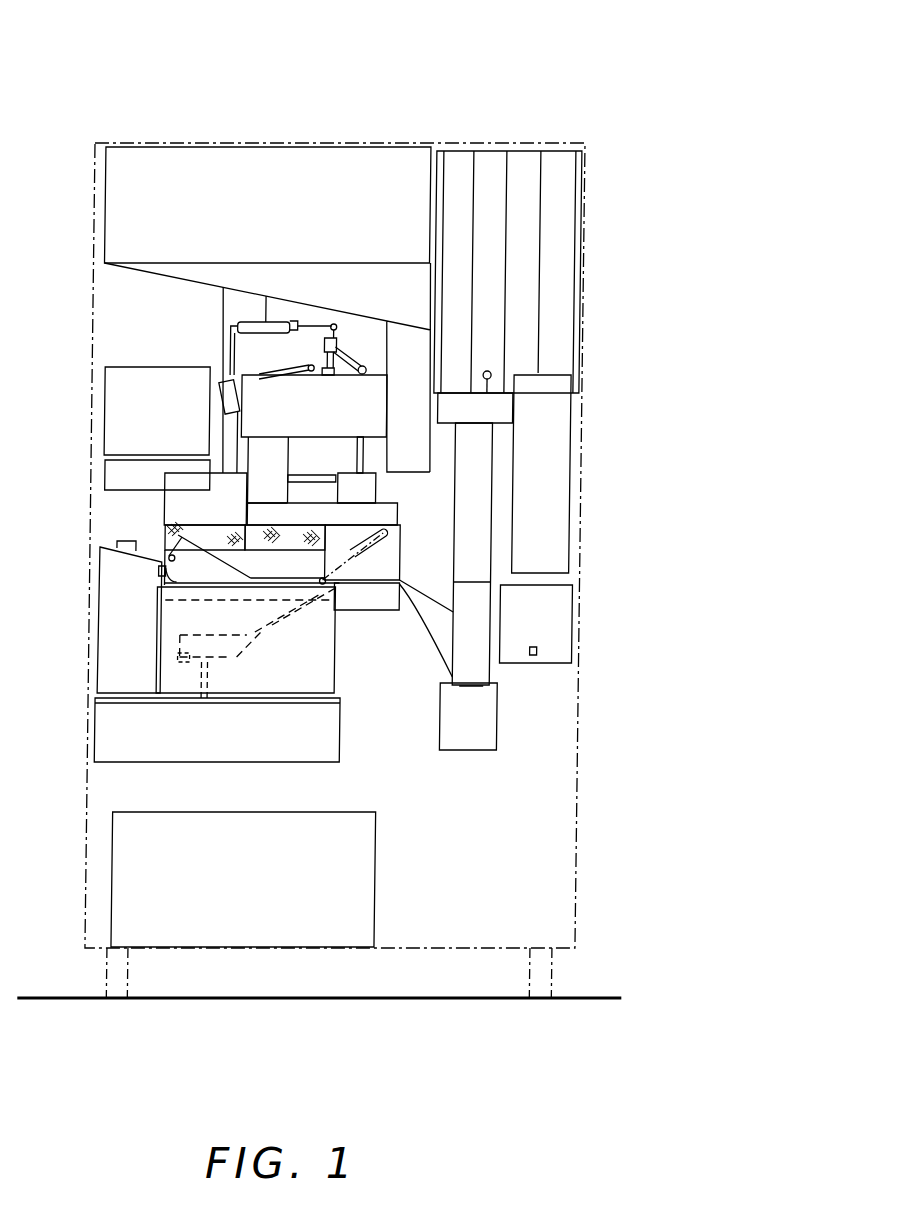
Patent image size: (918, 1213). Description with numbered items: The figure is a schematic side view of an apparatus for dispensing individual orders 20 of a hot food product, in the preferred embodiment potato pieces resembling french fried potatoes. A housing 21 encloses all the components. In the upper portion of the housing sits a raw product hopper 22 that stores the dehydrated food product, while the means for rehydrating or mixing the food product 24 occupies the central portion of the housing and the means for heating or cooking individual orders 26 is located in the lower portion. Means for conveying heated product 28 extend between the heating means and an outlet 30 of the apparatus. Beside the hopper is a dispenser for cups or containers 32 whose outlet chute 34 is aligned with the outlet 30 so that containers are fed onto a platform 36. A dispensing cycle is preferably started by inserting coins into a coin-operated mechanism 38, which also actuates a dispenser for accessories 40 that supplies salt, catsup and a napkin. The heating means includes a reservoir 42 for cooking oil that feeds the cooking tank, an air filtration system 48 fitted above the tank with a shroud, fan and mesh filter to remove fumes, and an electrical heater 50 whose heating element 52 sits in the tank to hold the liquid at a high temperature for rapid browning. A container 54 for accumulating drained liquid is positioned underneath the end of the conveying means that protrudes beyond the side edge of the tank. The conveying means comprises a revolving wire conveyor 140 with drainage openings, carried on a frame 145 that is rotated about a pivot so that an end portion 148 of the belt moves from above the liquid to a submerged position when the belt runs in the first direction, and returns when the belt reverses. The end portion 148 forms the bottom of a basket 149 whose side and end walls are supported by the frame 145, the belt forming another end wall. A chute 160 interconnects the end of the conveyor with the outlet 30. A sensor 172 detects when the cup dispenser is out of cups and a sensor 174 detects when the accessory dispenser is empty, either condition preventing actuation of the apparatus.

The apparatus for dispensing individual orders 20 is at (498, 67).
The housing 21 is at (587, 212).
The raw product hopper 22 is at (270, 217).
The means for rehydrating or mixing the food product 24 is at (332, 416).
The means for heating or cooking individual orders 26 is at (325, 647).
The means for conveying heated product 28 is at (400, 574).
The outlet 30 is at (475, 686).
The dispenser for cups or containers 32 is at (523, 292).
The outlet chute 34 is at (466, 673).
The platform 36 is at (478, 747).
The coin-operated mechanism 38 is at (559, 502).
The dispenser for accessories 40 is at (554, 611).
The reservoir 42 is at (165, 422).
The air filtration system 48 is at (226, 523).
The electrical heater 50 is at (148, 669).
The heating element 52 is at (167, 588).
The container for accumulating drained liquid 54 is at (385, 607).
The revolving wire conveyor 140 is at (177, 528).
The frame 145 is at (194, 665).
The end portion of the belt 148 is at (248, 653).
The basket 149 is at (224, 616).
The chute 160 is at (442, 634).
The sensor 172 is at (490, 393).
The sensor 174 is at (543, 650).